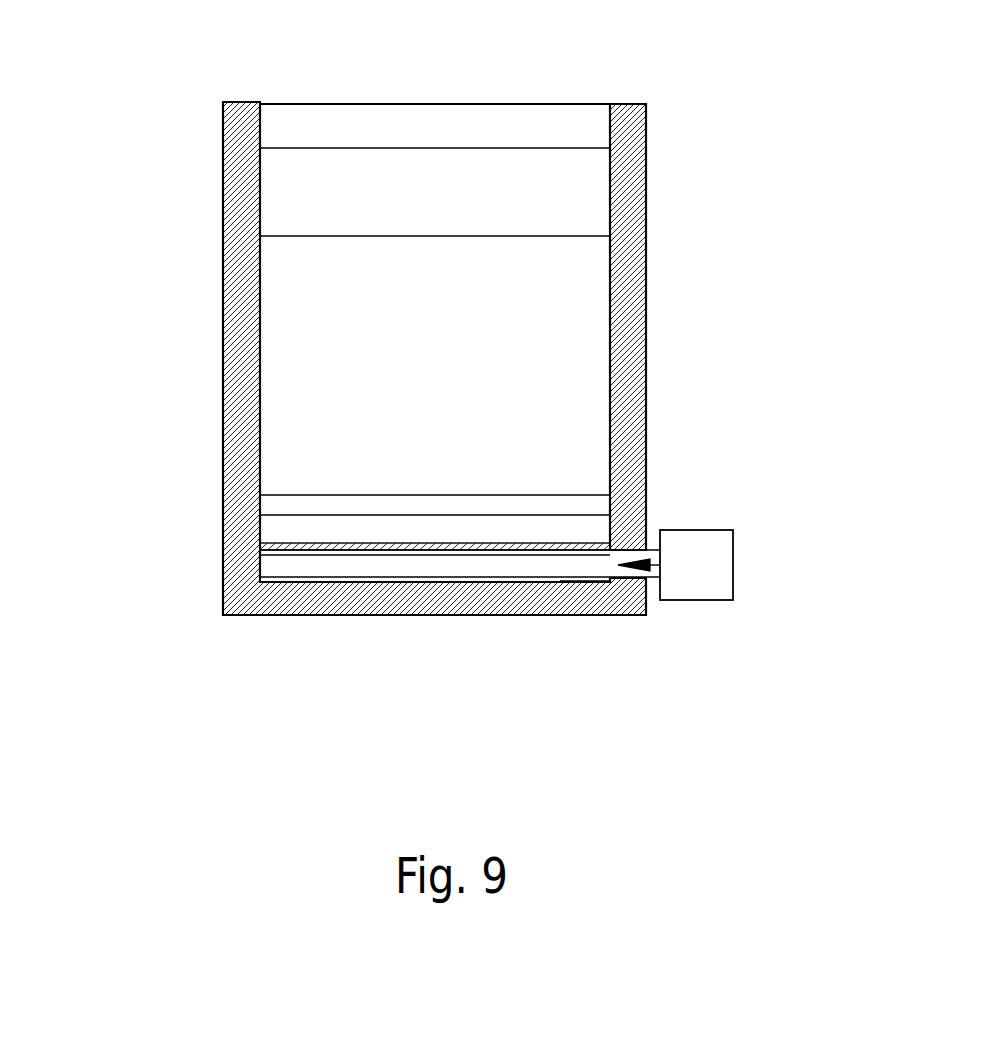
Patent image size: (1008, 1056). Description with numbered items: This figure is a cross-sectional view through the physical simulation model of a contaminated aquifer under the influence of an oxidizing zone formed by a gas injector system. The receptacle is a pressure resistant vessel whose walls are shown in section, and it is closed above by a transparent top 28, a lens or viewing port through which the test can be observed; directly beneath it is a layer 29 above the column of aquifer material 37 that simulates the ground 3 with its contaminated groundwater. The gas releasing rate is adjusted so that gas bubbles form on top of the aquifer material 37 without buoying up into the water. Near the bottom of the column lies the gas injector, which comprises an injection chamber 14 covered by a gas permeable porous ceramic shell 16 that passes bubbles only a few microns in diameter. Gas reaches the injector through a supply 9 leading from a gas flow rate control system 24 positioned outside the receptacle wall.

The ground 3 is at (335, 325).
The transparent top 28 is at (432, 104).
The upper layer 29 is at (528, 205).
The aquifer material 37 is at (420, 236).
The gas permeable porous ceramic shell 16 is at (415, 492).
The injection chamber 14 is at (336, 533).
The supply 9 is at (652, 548).
The gas flow rate control system 24 is at (694, 607).